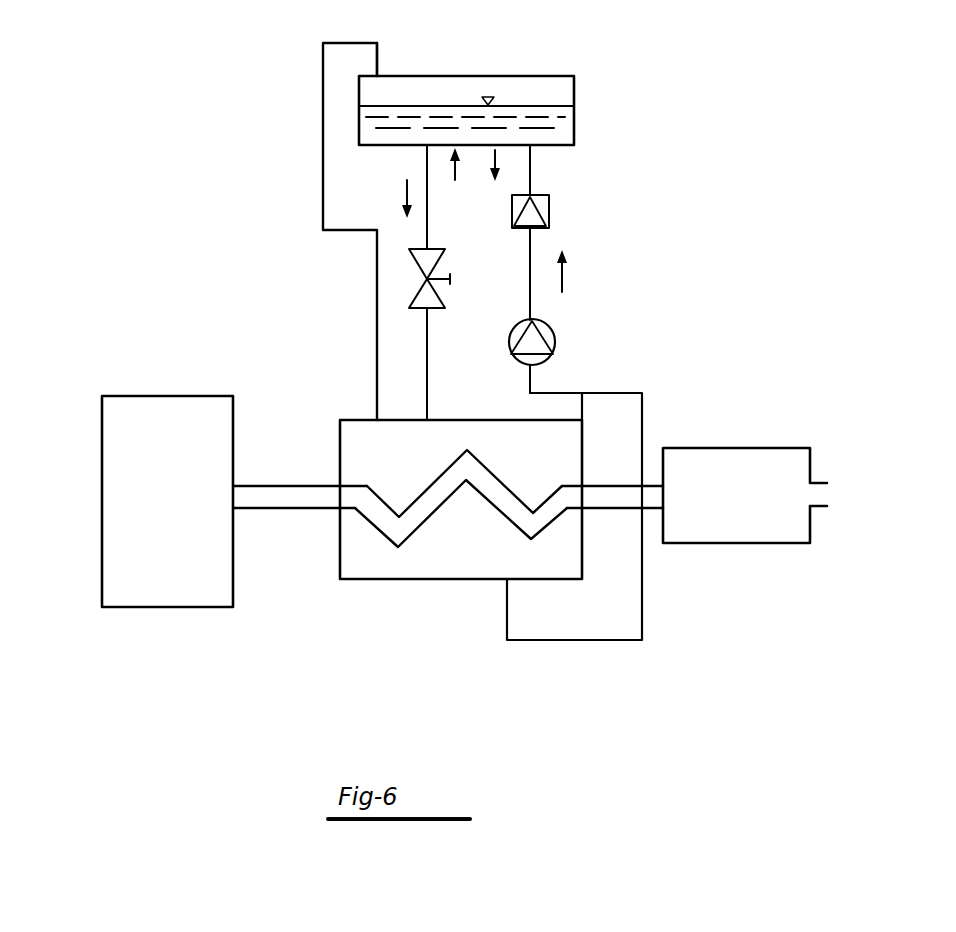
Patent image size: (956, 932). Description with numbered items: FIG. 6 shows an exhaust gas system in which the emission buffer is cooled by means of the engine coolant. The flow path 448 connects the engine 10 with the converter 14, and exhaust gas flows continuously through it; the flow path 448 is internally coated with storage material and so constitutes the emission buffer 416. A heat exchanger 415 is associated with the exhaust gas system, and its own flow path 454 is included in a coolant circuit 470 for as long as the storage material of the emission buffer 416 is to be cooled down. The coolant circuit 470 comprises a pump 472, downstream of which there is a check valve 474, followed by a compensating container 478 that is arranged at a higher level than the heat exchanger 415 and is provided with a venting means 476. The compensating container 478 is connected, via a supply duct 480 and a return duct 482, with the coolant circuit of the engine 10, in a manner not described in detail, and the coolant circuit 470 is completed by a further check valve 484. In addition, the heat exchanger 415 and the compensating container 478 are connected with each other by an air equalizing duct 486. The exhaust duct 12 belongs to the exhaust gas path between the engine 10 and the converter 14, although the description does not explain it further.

The engine 10 is at (184, 592).
The exhaust duct 12 is at (287, 498).
The converter 14 is at (763, 470).
The heat exchanger 415 is at (592, 406).
The emission buffer 416 is at (431, 505).
The flow path 448 is at (530, 545).
The flow path of the heat exchanger 454 is at (503, 442).
The coolant circuit 470 is at (530, 180).
The pump 472 is at (554, 331).
The check valve 474 is at (550, 211).
The venting means 476 is at (380, 73).
The compensating container 478 is at (542, 86).
The supply duct 480 is at (456, 160).
The return duct 482 is at (495, 150).
The check valve 484 is at (445, 300).
The air equalizing duct 486 is at (377, 307).